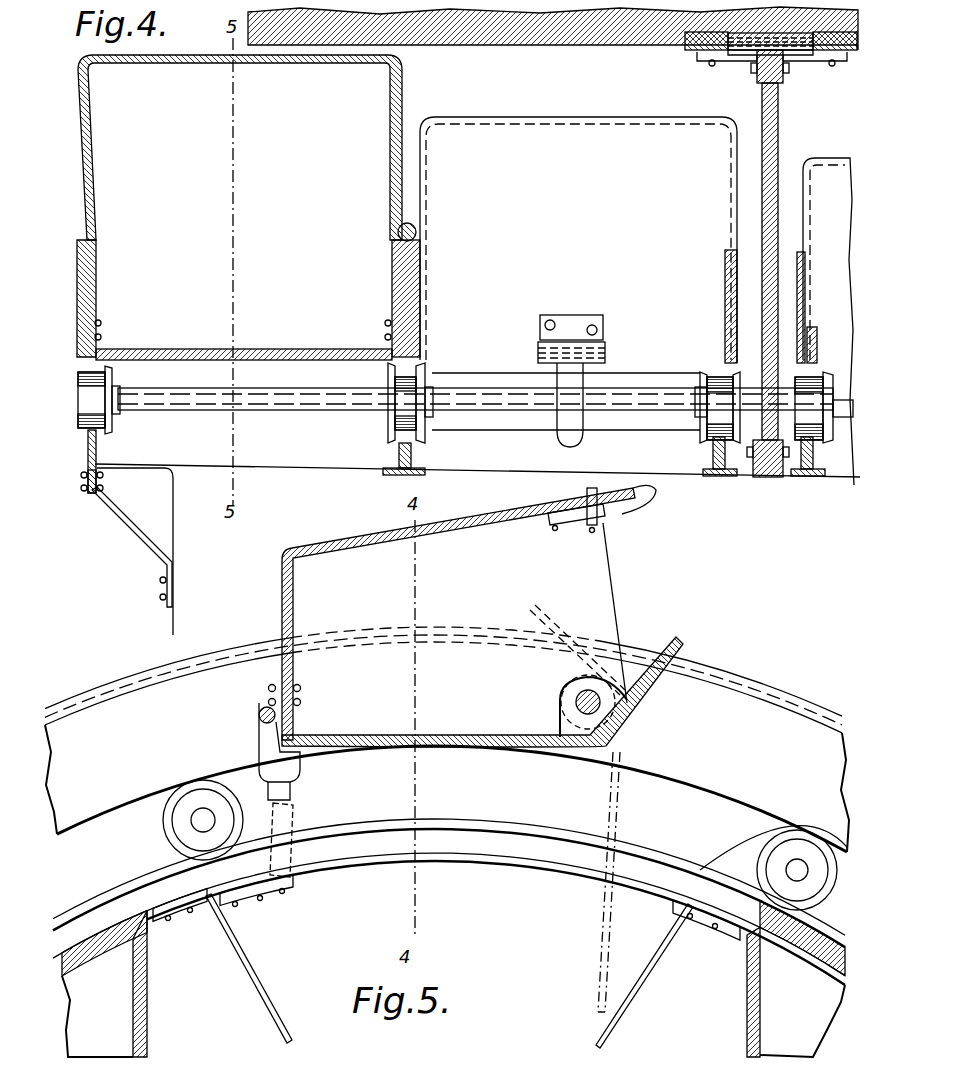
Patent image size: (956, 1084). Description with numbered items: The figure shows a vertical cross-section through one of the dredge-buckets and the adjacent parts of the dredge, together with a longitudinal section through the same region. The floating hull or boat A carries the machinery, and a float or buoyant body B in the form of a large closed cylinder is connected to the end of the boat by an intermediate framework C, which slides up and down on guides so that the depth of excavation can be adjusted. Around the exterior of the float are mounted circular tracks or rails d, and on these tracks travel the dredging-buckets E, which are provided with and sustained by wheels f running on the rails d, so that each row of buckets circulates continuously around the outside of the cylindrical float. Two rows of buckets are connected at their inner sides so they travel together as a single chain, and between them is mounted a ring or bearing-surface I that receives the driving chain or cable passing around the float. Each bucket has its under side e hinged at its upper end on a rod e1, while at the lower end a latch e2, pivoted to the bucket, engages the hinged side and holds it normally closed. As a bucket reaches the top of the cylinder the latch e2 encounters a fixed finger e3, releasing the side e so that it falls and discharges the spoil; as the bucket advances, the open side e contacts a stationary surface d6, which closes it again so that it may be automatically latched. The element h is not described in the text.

In FIG. 4, the floating hull or boat A is at (583, 45).
In FIG. 4, the float or buoyant body B is at (298, 470).
In FIG. 5, the float or buoyant body B is at (495, 866).
In FIG. 4, the intermediate framework C is at (778, 153).
In FIG. 4, the dredging-buckets E is at (97, 203).
In FIG. 5, the dredging-buckets E is at (293, 595).
In FIG. 4, the ring or bearing-surface I is at (418, 245).
In FIG. 4, the bead of door edge h is at (410, 228).
In FIG. 4, the circular tracks or rails d is at (97, 452).
In FIG. 5, the circular tracks or rails d is at (523, 820).
In FIG. 4, the wheels f is at (80, 396).
In FIG. 5, the wheels f is at (170, 822).
In FIG. 5, the under side of bucket e is at (447, 736).
In FIG. 5, the rod e1 is at (573, 705).
In FIG. 4, the latch e2 is at (575, 436).
In FIG. 5, the latch e2 is at (262, 757).
In FIG. 5, the fixed finger e3 is at (295, 823).
In FIG. 5, the stationary surface d6 is at (720, 853).